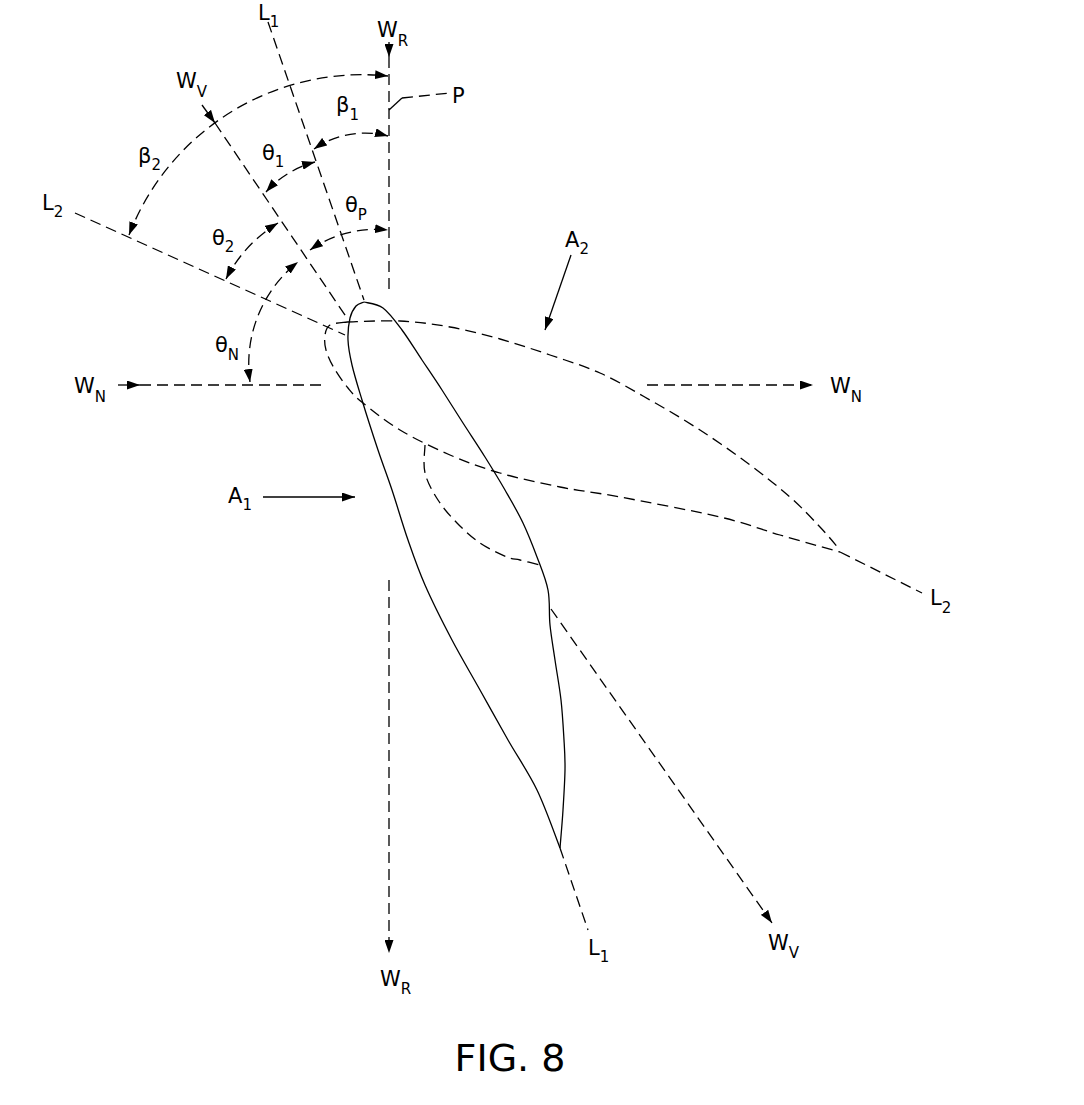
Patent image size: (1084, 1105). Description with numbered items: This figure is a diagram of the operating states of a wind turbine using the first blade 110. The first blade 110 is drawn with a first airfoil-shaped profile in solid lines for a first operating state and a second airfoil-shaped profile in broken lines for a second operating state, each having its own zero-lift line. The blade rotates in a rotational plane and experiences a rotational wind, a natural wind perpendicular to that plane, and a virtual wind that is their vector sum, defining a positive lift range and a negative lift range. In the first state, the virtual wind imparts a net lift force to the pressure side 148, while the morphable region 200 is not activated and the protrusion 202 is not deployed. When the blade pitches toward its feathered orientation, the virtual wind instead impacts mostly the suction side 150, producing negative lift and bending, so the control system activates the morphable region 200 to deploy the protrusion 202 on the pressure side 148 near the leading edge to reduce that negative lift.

The first blade 110 is at (436, 575).
The pressure side 148 is at (405, 542).
The suction side 150 is at (563, 725).
The morphable region 200 is at (362, 421).
The protrusion 202 is at (540, 565).